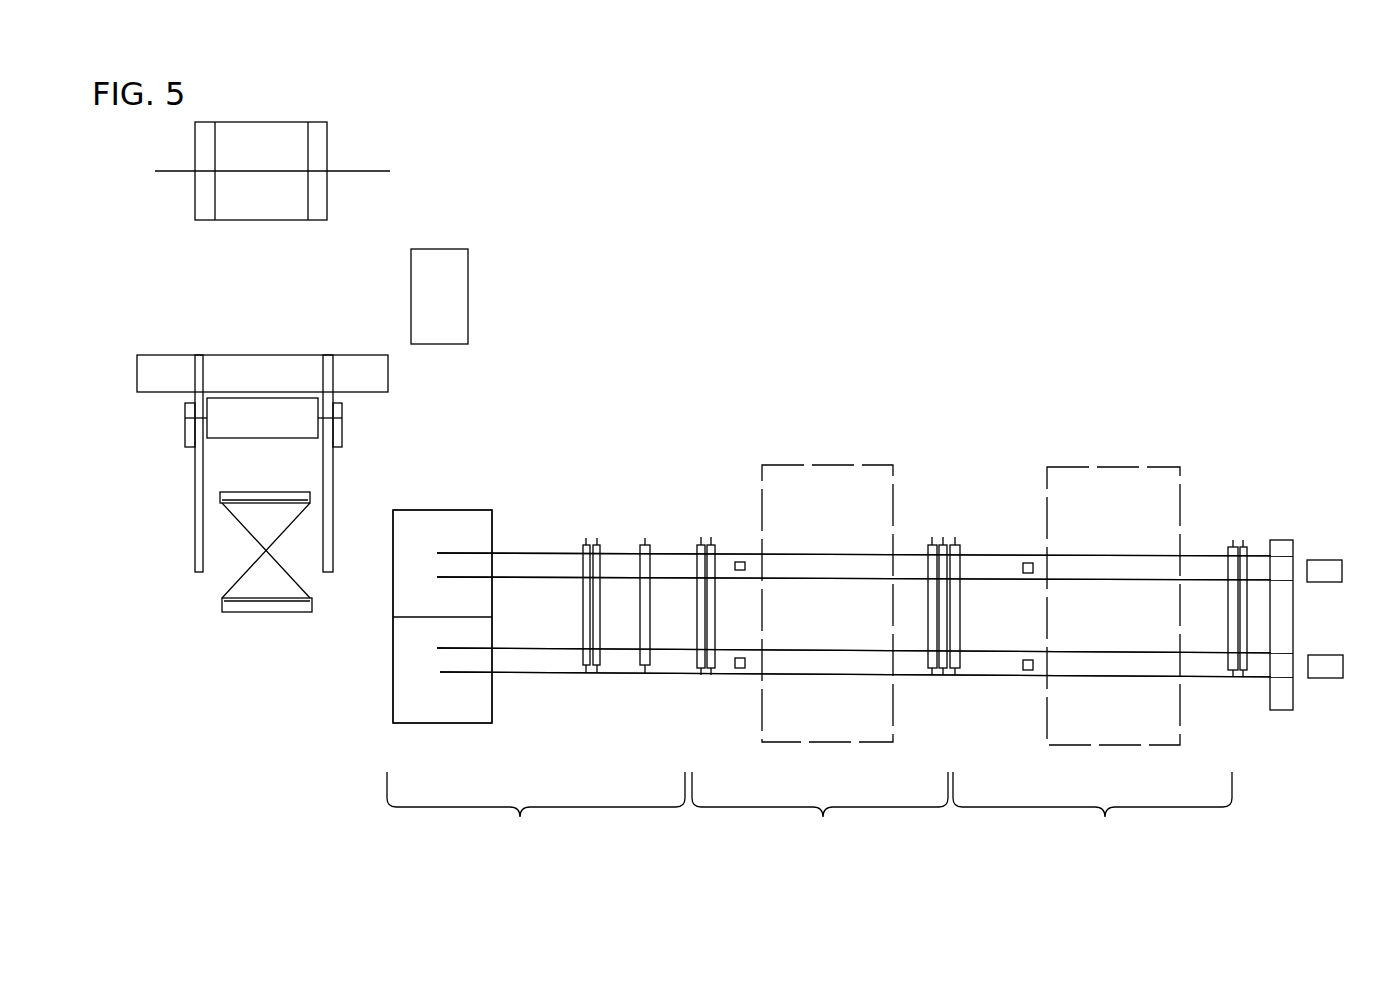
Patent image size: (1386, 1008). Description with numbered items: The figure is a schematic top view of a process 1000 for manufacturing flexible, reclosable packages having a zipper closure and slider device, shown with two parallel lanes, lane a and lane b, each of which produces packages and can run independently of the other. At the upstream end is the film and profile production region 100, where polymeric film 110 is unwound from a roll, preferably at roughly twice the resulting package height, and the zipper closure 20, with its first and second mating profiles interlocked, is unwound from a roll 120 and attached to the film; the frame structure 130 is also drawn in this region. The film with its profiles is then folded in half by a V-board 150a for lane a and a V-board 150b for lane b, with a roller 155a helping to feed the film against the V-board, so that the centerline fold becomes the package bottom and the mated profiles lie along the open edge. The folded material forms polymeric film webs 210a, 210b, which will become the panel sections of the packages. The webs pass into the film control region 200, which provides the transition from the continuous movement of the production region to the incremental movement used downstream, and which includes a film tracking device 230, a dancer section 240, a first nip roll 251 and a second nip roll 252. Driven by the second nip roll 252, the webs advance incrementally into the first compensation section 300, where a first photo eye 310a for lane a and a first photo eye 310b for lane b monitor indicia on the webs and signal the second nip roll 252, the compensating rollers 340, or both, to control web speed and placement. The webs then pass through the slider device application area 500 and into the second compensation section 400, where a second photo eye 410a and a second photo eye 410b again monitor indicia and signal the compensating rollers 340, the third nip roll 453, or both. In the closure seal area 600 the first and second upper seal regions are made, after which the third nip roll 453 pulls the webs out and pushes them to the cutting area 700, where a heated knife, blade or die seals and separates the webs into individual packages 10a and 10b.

The process 1000 is at (884, 310).
The film and profile production region 100 is at (410, 211).
The polymeric film 110 is at (328, 145).
The roll 120 is at (411, 315).
The frame 130 is at (165, 353).
The roller 155a is at (243, 490).
The V-board 150a is at (237, 522).
The V-board 150b is at (223, 610).
The film control region 200 is at (536, 811).
The first compensation section 300 is at (820, 812).
The second compensation section 400 is at (1092, 812).
The film tracking device 230 is at (392, 661).
The zipper closure 20 is at (555, 552).
The polymeric film web 210a is at (526, 547).
The polymeric film web 210b is at (532, 683).
The first nip roll 251 is at (592, 608).
The dancer section 240 is at (641, 599).
The second nip roll 252 is at (695, 630).
The first photo eye 310a is at (738, 560).
The first photo eye 310b is at (740, 670).
The slider device application area 500 is at (829, 463).
The compensating rollers 340 is at (949, 678).
The second photo eye 410a is at (1025, 562).
The second photo eye 410b is at (1030, 673).
The closure seal area 600 is at (1116, 463).
The third nip roll 453 is at (1238, 601).
The cutting area 700 is at (1282, 710).
The package 10a is at (1327, 560).
The package 10b is at (1327, 655).